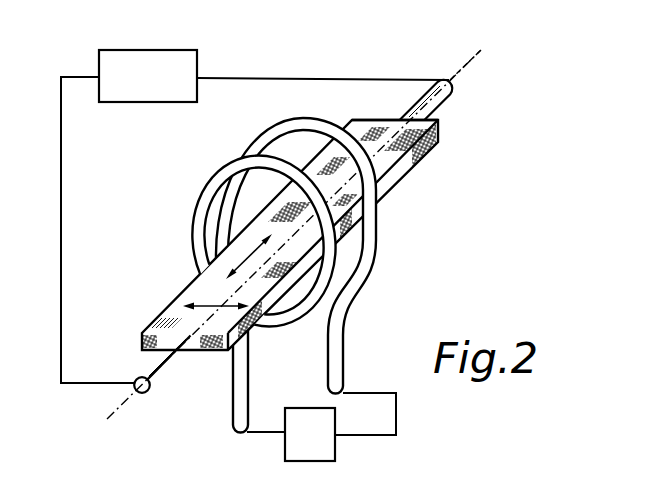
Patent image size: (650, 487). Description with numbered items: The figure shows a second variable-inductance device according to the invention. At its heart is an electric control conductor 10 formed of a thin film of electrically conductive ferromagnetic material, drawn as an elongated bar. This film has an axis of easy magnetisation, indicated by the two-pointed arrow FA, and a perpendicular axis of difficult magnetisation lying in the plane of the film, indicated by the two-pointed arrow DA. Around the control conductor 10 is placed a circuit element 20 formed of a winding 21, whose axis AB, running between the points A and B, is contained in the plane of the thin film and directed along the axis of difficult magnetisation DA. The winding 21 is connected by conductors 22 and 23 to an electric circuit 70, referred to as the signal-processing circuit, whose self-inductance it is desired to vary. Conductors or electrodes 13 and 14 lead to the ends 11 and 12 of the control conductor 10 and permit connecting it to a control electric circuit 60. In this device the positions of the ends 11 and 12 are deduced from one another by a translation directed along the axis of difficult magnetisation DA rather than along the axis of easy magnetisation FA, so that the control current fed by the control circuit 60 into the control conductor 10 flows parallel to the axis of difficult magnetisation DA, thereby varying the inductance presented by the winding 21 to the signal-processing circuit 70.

The control conductor 10 is at (299, 238).
The end of control conductor 11 is at (204, 352).
The end of control conductor 12 is at (380, 124).
The conductor or electrode 13 is at (146, 368).
The conductor or electrode 14 is at (446, 101).
The circuit element 20 is at (274, 262).
The winding 21 is at (286, 241).
The conductor 22 is at (237, 409).
The conductor 23 is at (338, 364).
The control electric circuit 60 is at (255, 216).
The electric circuit 70 is at (321, 427).
The axis end A is at (286, 234).
The axis end B is at (472, 63).
The axis of difficult magnetisation DA is at (243, 257).
The axis of easy magnetisation FA is at (208, 304).